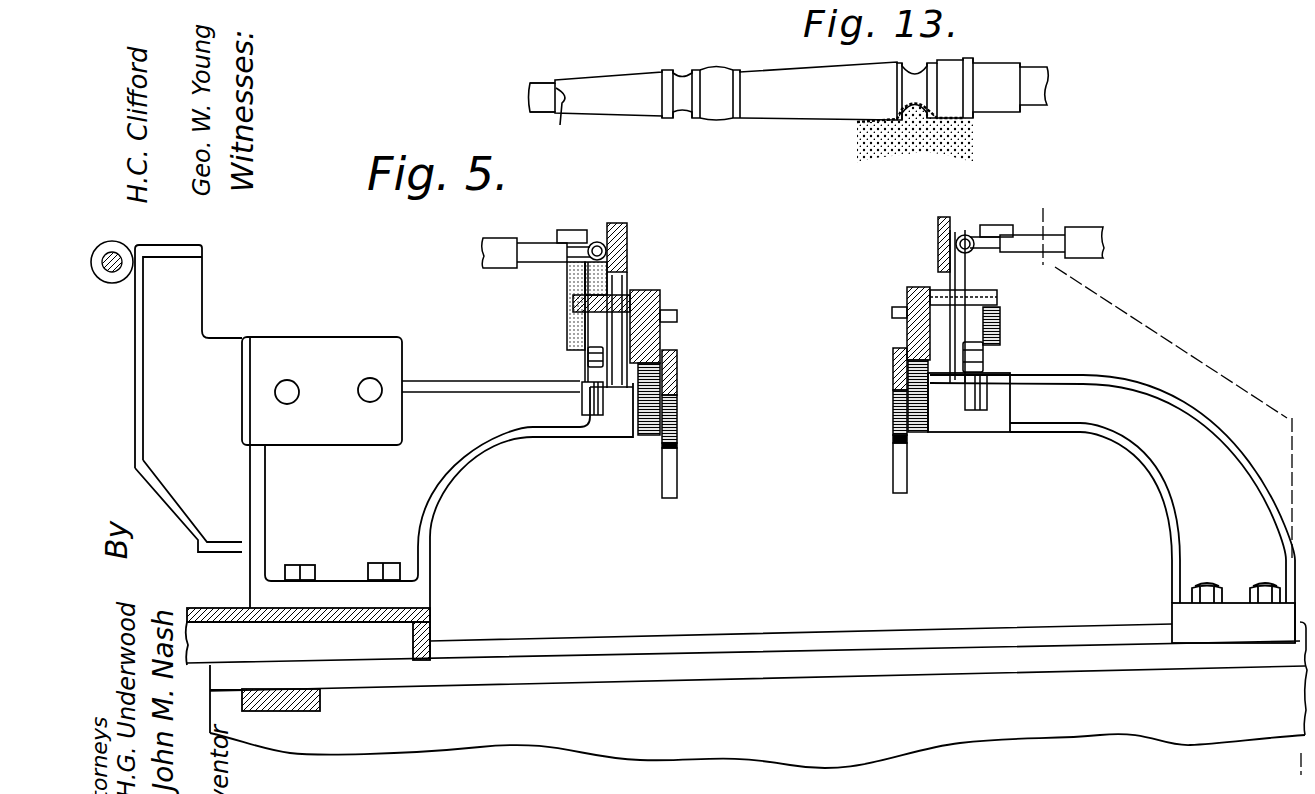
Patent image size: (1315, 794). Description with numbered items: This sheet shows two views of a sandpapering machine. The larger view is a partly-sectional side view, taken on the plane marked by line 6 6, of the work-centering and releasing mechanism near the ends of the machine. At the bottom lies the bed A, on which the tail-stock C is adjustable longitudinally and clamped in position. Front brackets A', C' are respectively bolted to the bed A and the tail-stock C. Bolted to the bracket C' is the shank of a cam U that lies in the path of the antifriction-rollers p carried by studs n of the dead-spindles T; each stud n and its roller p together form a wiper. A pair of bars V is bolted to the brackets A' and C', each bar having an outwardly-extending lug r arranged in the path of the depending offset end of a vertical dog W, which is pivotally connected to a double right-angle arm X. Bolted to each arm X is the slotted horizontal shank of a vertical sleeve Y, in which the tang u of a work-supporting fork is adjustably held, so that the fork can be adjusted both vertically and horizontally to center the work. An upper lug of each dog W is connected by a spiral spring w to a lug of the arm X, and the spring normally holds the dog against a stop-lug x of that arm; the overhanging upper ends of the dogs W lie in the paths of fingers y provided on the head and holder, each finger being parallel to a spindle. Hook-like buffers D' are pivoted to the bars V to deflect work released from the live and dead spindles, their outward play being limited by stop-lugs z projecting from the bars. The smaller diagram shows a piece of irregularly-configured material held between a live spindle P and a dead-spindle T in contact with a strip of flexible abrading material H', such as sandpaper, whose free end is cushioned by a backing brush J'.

In FIG. 13, the live spindle P is at (1038, 93).
In FIG. 13, the dead-spindle T is at (530, 96).
In FIG. 13, the flexible abrading material H' is at (901, 103).
In FIG. 13, the brush J' is at (896, 138).
In FIG. 5, the antifriction-roller p is at (118, 243).
In FIG. 5, the stud n is at (108, 277).
In FIG. 5, the cam U is at (128, 366).
In FIG. 5, the front bracket C' is at (491, 368).
In FIG. 5, the tail-stock C is at (598, 553).
In FIG. 5, the bed A is at (747, 689).
In FIG. 5, the front bracket A' is at (1112, 509).
In FIG. 5, the finger y is at (537, 243).
In FIG. 5, the spiral spring w is at (597, 240).
In FIG. 5, the double right-angle arm X is at (628, 253).
In FIG. 5, the stop-lug x is at (573, 272).
In FIG. 5, the dog W is at (570, 317).
In FIG. 5, the lug r is at (573, 300).
In FIG. 5, the bar V is at (652, 290).
In FIG. 5, the stop-lug z is at (677, 312).
In FIG. 5, the vertical sleeve Y is at (580, 358).
In FIG. 5, the tang u is at (592, 400).
In FIG. 5, the hook-like buffer D' is at (783, 423).
In FIG. 5, the line 6 6 is at (1058, 200).